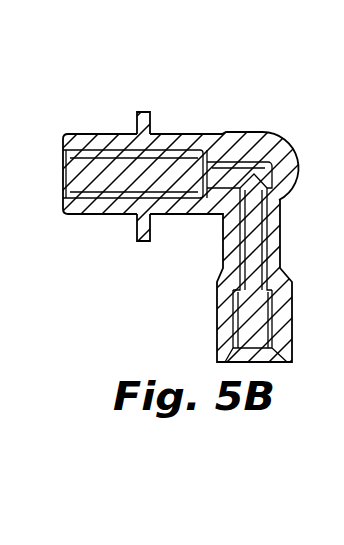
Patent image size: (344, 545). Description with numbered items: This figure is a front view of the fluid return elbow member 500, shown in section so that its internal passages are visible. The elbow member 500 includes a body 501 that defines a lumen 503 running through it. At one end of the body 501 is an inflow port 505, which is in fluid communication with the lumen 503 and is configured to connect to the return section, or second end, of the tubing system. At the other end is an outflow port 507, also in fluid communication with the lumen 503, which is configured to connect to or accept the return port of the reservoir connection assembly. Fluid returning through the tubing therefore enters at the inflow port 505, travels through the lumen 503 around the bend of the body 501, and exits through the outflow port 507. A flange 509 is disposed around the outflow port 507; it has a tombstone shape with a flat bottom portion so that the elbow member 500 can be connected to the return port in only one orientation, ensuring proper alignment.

The elbow member 500 is at (72, 127).
The body 501 is at (267, 142).
The lumen 503 is at (253, 215).
The inflow port 505 is at (257, 333).
The outflow port 507 is at (83, 176).
The flange 509 is at (152, 120).